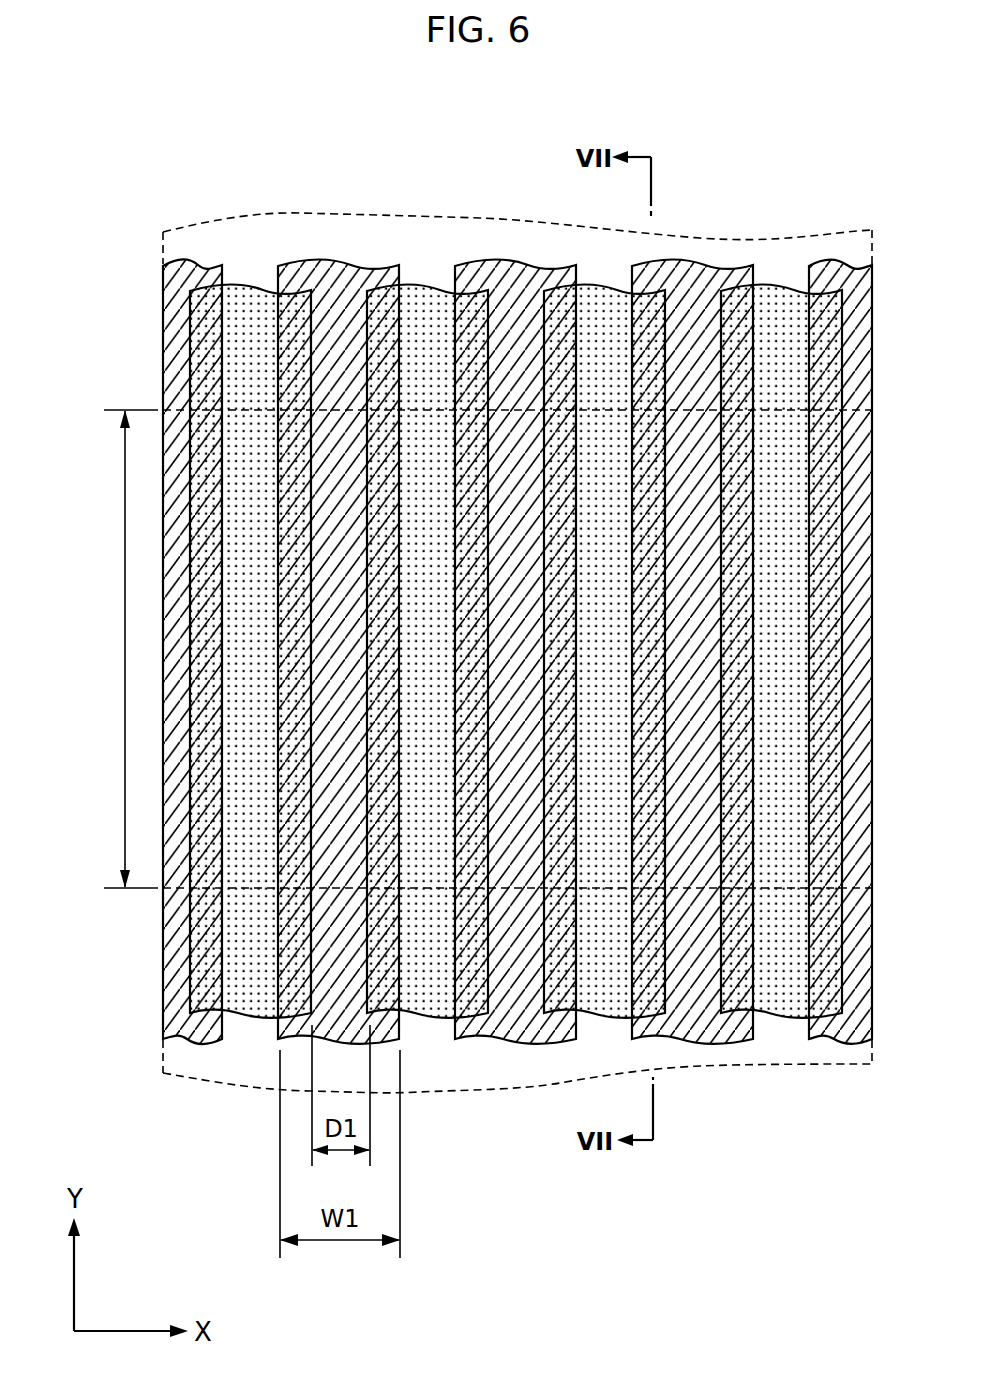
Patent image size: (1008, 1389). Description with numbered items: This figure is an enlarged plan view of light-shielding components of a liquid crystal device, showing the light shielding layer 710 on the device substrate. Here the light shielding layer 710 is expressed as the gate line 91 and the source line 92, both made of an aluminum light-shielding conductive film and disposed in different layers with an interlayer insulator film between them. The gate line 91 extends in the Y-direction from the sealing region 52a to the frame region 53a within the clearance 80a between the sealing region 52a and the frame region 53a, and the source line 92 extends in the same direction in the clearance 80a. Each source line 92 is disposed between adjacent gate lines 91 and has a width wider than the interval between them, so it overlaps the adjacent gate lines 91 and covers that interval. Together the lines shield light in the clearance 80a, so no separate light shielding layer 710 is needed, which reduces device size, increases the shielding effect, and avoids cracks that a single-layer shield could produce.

The light shielding layer 710 is at (517, 570).
The gate line 91 is at (253, 305).
The source line 92 is at (341, 282).
The frame region 53a is at (733, 240).
The sealing region 52a is at (744, 1067).
The clearance 80a is at (124, 648).